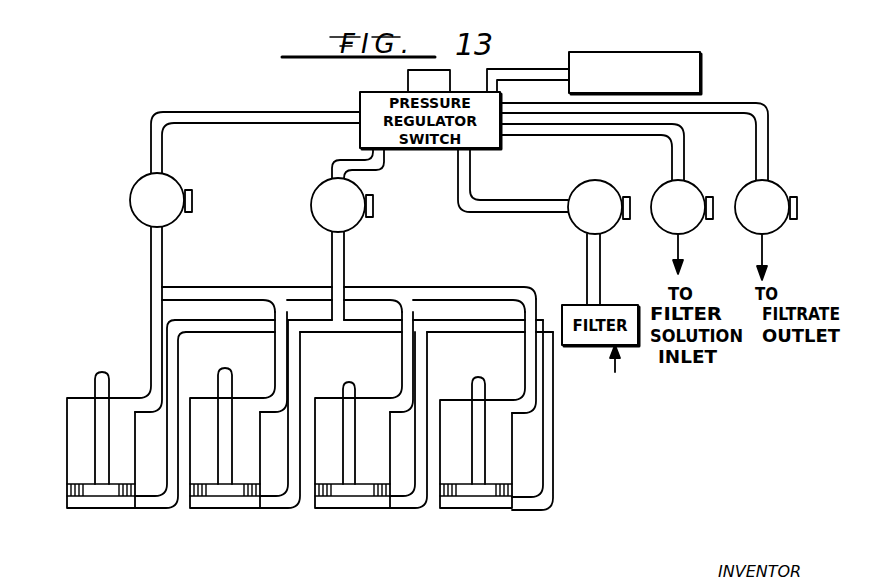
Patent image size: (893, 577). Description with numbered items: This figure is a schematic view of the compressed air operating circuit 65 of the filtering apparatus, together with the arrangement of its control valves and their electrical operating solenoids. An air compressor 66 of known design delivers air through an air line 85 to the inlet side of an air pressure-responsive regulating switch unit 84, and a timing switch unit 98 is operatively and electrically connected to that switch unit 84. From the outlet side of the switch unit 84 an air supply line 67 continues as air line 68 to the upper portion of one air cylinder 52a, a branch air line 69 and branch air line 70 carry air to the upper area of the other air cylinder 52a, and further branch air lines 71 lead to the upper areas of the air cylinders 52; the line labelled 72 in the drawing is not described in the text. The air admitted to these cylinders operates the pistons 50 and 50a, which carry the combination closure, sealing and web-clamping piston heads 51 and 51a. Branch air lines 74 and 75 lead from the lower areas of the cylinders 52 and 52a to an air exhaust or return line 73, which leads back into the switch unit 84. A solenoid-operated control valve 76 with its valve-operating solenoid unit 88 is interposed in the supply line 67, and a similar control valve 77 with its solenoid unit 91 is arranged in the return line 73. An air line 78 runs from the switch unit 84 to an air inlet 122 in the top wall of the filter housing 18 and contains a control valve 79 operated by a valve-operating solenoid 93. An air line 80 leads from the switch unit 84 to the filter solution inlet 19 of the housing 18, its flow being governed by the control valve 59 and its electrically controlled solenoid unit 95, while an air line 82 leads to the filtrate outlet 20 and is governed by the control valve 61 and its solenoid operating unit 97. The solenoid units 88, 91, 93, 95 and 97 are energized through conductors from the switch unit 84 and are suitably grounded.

The timing switch unit 98 is at (408, 74).
The air compressor 66 is at (634, 52).
The air line 85 is at (535, 68).
The compressed air system 65 is at (754, 98).
The air line 82 is at (767, 150).
The air line 80 is at (680, 148).
The air supply line 67 is at (268, 124).
The air pressure-responsive regulating switch unit 84 is at (412, 148).
The air line 78 is at (517, 208).
The solenoid-operated control valve 76 is at (135, 218).
The valve-operating solenoid unit 88 is at (194, 202).
The solenoid-operated control valve 77 is at (312, 213).
The valve-operating solenoid unit 91 is at (374, 208).
The solenoid-operated control valve 79 is at (612, 157).
The valve-operating solenoid 93 is at (626, 197).
The control valve 59 is at (654, 224).
The valve-operating solenoid unit 95 is at (710, 197).
The control valve 61 is at (742, 235).
The solenoid operating unit 97 is at (797, 208).
The filter solution inlet 19 is at (674, 264).
The filtrate outlet 20 is at (775, 268).
The air inlet 122 is at (584, 300).
The filter housing 18 is at (625, 364).
The air line 68 is at (150, 310).
The air exhaust or return line 73 is at (346, 266).
The branch air line 69 is at (250, 287).
The branch air line 70 is at (276, 352).
The branch air line 71 is at (402, 363).
The conduit to fourth tank 72 is at (530, 384).
The branch air line 74 is at (158, 498).
The branch air line 75 is at (423, 500).
The air cylinder 52a is at (80, 436).
The air cylinder 52 is at (504, 438).
The combination closure, sealing and web-clamping piston head 51a is at (83, 488).
The combination closure, sealing and web-clamping piston head 51 is at (370, 490).
The piston 50a is at (100, 370).
The piston 50 is at (347, 382).